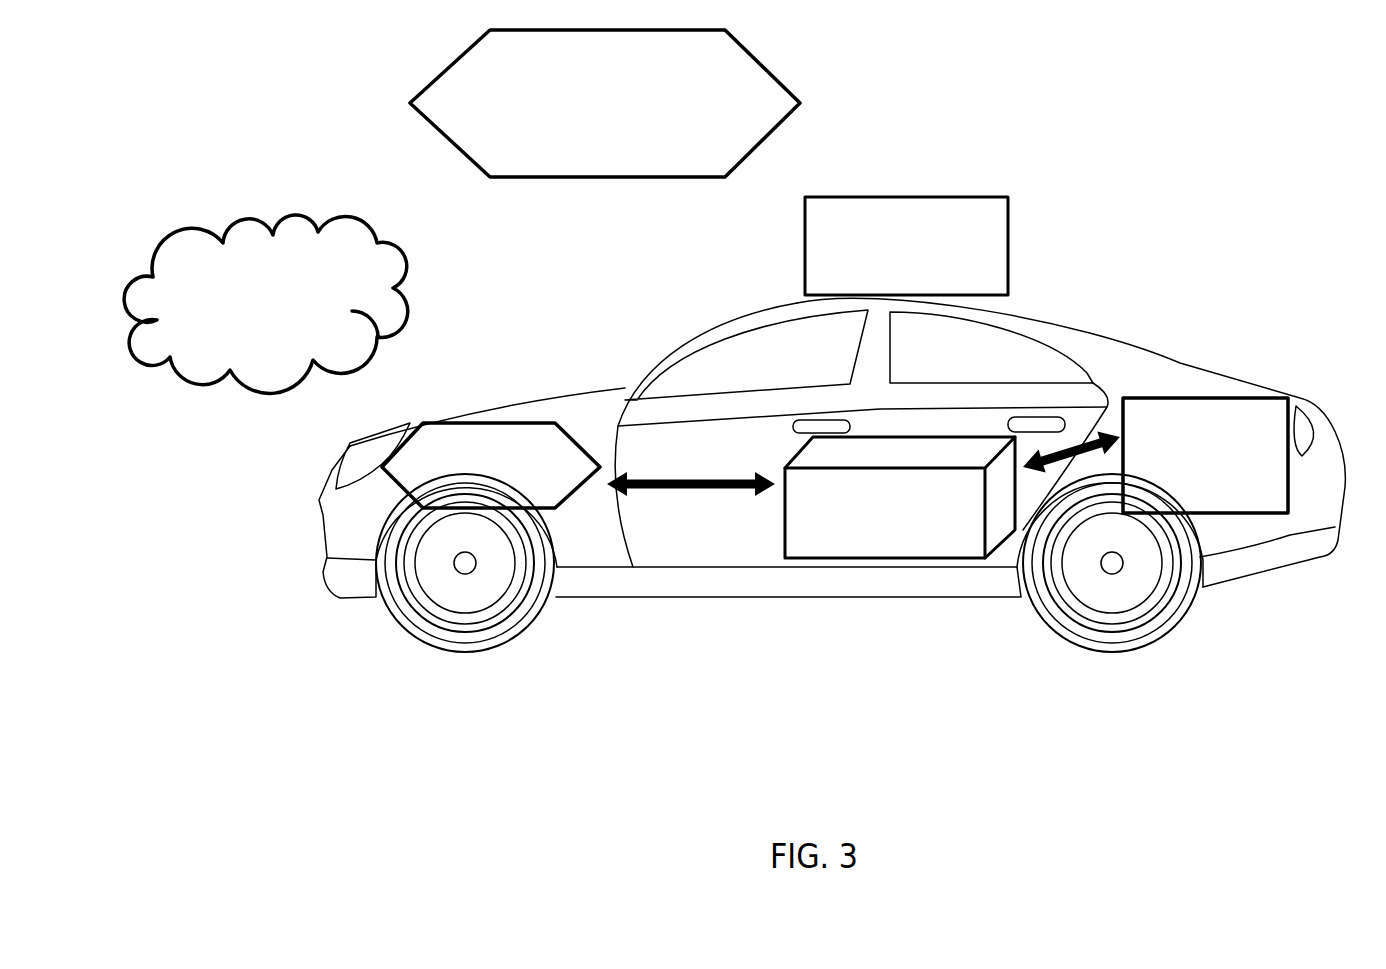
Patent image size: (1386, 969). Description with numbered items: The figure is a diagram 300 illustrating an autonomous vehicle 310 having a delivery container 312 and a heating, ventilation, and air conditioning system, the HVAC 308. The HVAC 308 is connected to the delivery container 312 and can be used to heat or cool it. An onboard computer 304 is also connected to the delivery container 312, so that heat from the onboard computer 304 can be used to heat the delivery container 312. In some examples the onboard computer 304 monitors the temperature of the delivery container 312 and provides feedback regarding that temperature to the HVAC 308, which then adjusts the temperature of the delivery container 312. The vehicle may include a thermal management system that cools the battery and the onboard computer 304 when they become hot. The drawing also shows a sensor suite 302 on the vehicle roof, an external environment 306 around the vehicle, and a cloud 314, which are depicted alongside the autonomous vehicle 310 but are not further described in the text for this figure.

The diagram 300 is at (203, 116).
The sensor suite 302 is at (906, 246).
The onboard computer 304 is at (1205, 455).
The external environment 306 is at (605, 103).
The heating, ventilation, and air conditioning (HVAC) system 308 is at (491, 465).
The autonomous vehicle 310 is at (700, 558).
The delivery container 312 is at (900, 497).
The cloud 314 is at (266, 304).